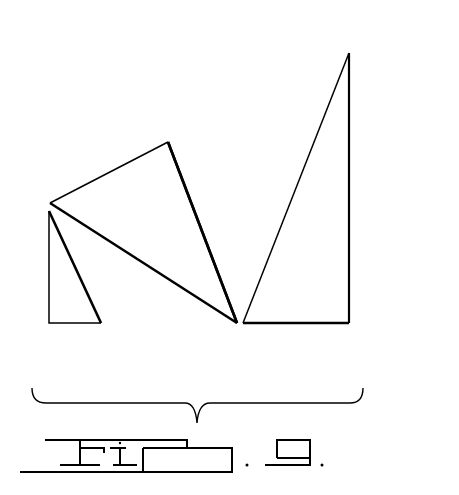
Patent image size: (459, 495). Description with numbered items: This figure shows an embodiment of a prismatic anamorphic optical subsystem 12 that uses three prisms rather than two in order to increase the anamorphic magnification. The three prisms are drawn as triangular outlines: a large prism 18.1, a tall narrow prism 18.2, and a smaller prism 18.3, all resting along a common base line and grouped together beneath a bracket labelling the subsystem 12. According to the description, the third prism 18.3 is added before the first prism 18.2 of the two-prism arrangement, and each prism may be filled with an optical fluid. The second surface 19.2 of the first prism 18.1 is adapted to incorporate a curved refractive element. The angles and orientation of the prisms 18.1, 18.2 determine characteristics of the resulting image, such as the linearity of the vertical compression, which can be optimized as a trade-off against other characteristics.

The prismatic anamorphic optical subsystem 12 is at (237, 82).
The first prism 18.1 is at (175, 289).
The first prism 18.2 is at (298, 323).
The third prism 18.3 is at (63, 323).
The second surface 19.2 is at (181, 172).